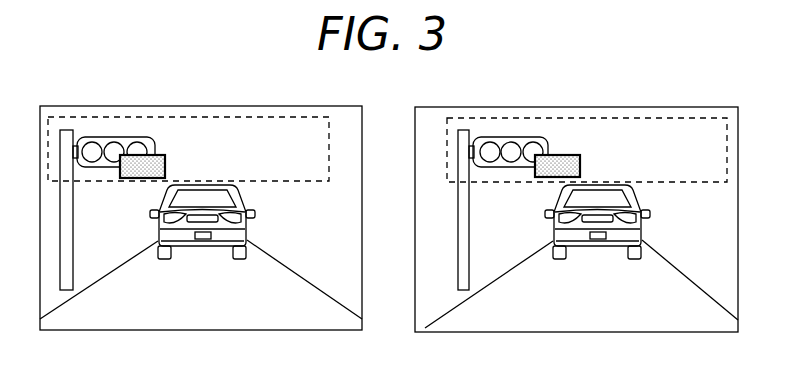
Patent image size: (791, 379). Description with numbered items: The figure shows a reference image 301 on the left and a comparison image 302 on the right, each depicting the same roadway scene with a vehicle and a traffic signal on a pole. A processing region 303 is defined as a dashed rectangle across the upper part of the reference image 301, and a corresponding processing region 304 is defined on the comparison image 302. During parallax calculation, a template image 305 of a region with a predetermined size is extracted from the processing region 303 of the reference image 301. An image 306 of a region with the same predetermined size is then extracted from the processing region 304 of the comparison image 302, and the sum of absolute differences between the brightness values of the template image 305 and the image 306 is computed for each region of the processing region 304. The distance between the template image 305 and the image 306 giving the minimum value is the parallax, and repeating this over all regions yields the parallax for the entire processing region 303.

The reference image 301 is at (255, 106).
The comparison image 302 is at (652, 107).
The processing region of the reference image 303 is at (308, 182).
The processing region of the comparison image 304 is at (688, 182).
The template image 305 is at (155, 155).
The image in a region of the comparison image 306 is at (557, 155).